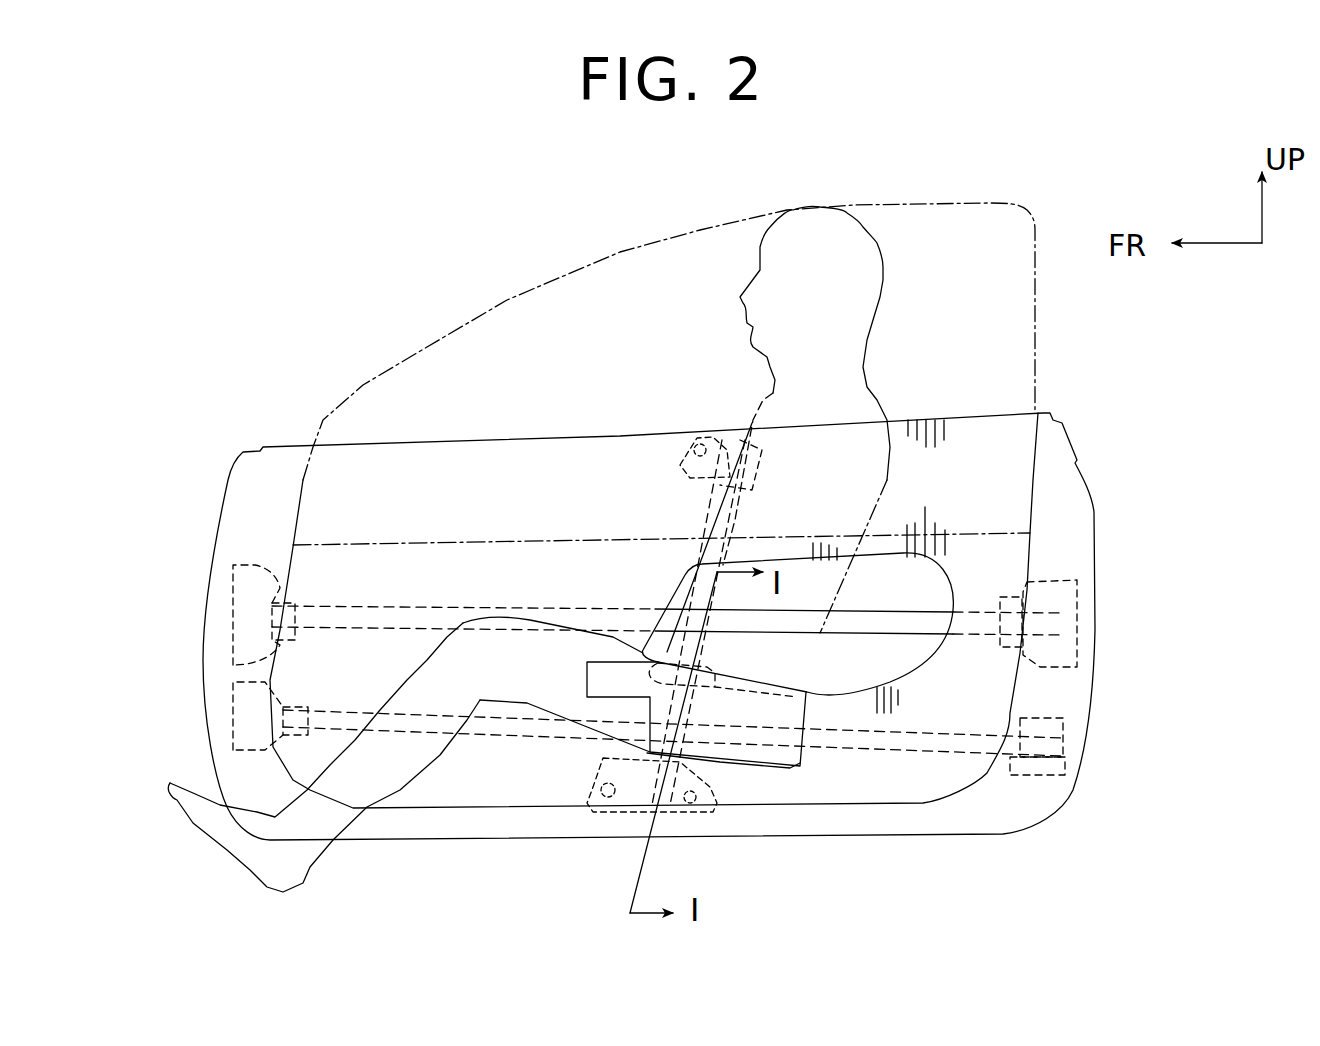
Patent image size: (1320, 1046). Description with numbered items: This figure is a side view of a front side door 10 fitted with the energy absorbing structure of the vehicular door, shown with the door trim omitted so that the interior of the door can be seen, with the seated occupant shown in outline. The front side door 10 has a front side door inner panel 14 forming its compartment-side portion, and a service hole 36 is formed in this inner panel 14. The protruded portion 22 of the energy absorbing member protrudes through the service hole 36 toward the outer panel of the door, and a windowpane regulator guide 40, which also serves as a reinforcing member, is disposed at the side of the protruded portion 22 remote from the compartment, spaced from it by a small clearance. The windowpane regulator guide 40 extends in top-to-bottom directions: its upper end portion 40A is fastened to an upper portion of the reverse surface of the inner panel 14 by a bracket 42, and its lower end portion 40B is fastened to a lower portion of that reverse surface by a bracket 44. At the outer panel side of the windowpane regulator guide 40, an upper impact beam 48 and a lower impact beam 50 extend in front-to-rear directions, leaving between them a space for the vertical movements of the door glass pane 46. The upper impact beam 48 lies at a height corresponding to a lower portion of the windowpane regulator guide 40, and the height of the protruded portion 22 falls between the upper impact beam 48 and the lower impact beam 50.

The front side door 10 is at (1073, 394).
The front side door inner panel 14 is at (1060, 490).
The door glass pane 46 is at (1037, 303).
The protruded portion 22 is at (743, 678).
The upper impact beam 48 is at (907, 620).
The service hole 36 is at (912, 664).
The windowpane regulator guide 40 is at (757, 515).
The upper end portion 40A is at (753, 443).
The lower end portion 40B is at (663, 810).
The bracket 42 is at (720, 440).
The bracket 44 is at (627, 810).
The lower impact beam 50 is at (865, 752).